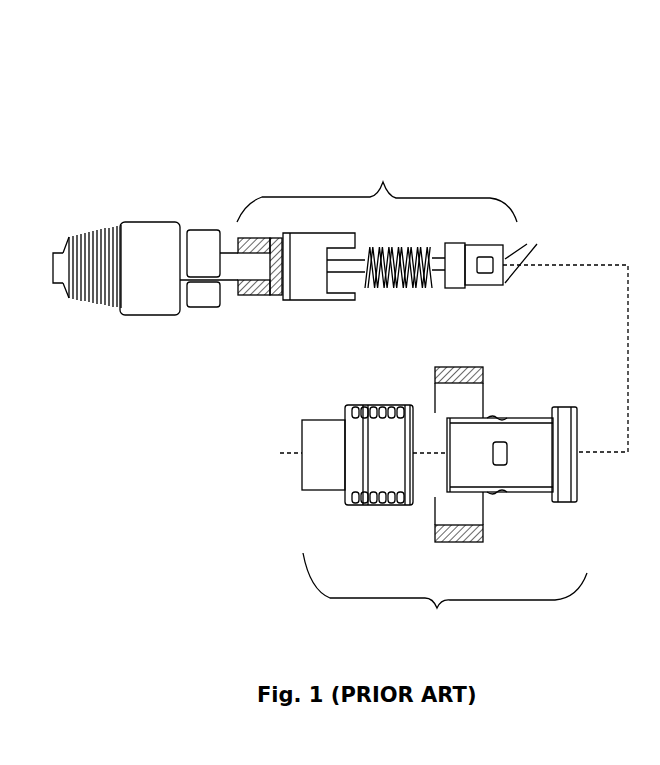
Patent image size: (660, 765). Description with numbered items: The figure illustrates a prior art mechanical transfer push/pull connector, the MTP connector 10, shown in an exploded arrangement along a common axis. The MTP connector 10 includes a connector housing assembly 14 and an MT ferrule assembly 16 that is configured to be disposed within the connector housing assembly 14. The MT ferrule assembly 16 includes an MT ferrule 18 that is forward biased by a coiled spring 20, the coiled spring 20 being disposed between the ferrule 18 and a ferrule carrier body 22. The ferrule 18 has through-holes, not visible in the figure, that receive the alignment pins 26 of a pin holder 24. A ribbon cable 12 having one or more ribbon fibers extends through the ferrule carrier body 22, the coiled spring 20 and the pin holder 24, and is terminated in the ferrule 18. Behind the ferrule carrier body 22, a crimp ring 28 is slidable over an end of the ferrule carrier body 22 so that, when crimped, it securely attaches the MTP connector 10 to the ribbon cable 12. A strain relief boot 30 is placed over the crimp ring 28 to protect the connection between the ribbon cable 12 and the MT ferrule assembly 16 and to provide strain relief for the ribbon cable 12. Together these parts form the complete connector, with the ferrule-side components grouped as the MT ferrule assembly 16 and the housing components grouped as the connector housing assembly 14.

The MTP connector 10 is at (447, 70).
The ribbon cable 12 is at (52, 283).
The connector housing assembly 14 is at (444, 504).
The MT ferrule assembly 16 is at (377, 189).
The MT ferrule 18 is at (487, 285).
The coiled spring 20 is at (397, 290).
The ferrule carrier body 22 is at (314, 276).
The pin holder 24 is at (452, 289).
The alignment pins 26 is at (530, 255).
The crimp ring 28 is at (211, 262).
The strain relief boot 30 is at (158, 276).